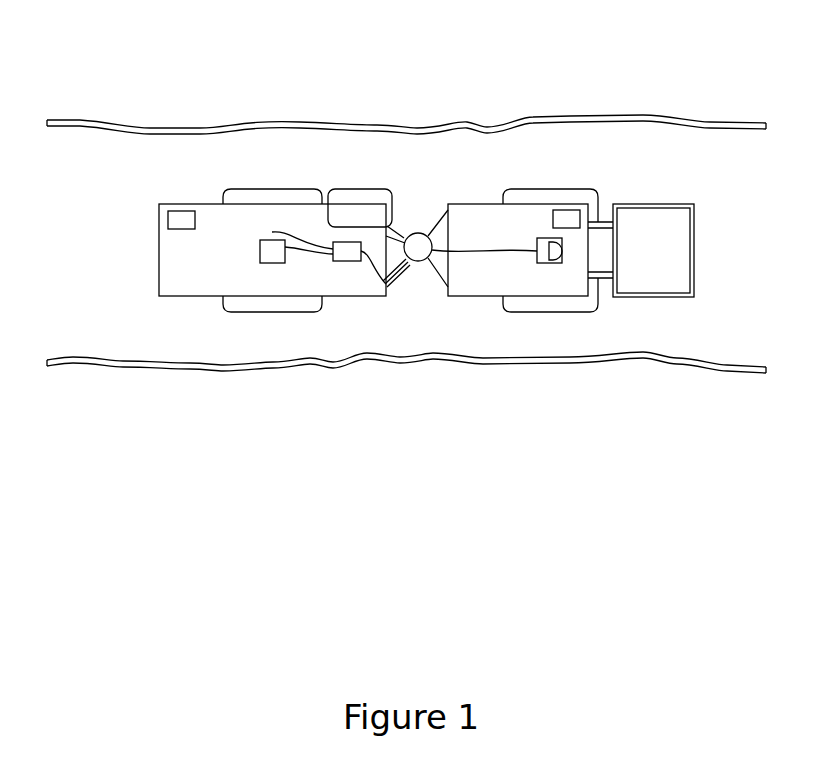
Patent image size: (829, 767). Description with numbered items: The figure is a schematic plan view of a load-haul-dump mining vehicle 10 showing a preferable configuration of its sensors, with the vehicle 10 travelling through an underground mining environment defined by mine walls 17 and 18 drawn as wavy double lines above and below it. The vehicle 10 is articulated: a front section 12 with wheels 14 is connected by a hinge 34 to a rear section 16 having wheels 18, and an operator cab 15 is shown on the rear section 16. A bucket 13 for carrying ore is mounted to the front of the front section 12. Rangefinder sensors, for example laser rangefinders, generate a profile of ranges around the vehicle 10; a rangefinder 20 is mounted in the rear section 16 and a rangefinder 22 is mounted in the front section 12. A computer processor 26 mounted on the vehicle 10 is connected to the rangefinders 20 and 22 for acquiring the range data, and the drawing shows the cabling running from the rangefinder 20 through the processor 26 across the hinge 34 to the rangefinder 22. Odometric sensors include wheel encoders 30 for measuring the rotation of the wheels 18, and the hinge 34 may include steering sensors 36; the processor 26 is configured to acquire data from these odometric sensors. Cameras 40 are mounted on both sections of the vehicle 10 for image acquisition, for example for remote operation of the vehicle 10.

The vehicle 10 is at (393, 243).
The front section 12 is at (473, 217).
The bucket 13 is at (653, 260).
The wheels 14 is at (532, 193).
The operator cab 15 is at (363, 193).
The rear section 16 is at (193, 284).
The mine wall 17 is at (100, 121).
The wheels 18 is at (238, 193).
The rangefinder 20 is at (275, 264).
The rangefinder 22 is at (552, 256).
The computer processor 26 is at (358, 262).
The wheel encoders 30 is at (272, 226).
The hinge 34 is at (419, 233).
The steering sensors 36 is at (420, 262).
The cameras 40 is at (182, 219).